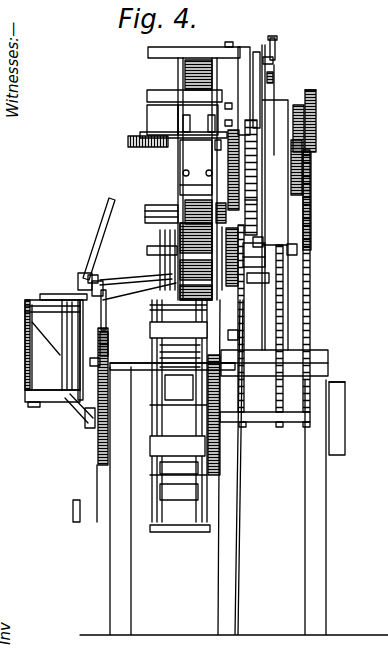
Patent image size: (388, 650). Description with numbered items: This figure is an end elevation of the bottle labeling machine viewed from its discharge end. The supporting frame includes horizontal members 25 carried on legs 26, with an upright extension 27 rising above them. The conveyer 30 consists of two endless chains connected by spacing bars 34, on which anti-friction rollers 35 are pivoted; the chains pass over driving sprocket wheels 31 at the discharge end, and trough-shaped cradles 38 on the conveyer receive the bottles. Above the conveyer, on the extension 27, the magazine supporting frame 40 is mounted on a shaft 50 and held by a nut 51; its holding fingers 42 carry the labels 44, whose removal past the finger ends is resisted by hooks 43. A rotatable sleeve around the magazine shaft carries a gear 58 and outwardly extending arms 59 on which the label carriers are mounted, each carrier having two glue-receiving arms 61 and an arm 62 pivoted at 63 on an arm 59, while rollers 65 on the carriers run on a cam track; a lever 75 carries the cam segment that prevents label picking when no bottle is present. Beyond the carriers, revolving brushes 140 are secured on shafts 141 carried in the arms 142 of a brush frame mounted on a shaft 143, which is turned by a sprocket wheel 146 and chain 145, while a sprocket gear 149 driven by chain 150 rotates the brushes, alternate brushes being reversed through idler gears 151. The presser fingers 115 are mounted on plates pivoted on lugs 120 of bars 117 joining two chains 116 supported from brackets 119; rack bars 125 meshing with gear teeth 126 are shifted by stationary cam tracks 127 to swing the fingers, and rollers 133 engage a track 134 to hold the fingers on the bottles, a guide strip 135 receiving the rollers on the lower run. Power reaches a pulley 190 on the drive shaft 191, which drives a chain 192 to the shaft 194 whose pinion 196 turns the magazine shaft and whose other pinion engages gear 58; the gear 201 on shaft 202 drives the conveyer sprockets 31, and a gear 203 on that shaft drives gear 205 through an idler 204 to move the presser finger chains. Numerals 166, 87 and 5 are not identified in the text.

The arms 61 is at (148, 52).
The lever 75 is at (276, 43).
The arm 62 is at (273, 60).
The pivot 63 is at (273, 78).
The wheels or rollers 65 is at (263, 132).
The rack 166 is at (303, 106).
The pinion 196 is at (317, 132).
The shaft 194 is at (283, 110).
The rack bar 87 is at (240, 160).
The gear 58 is at (258, 174).
The arms 59 is at (250, 199).
The upright extension 27 is at (270, 197).
The chain 192 is at (312, 208).
The sprocket wheel 146 is at (299, 251).
The sprocket gear 149 is at (258, 256).
The arms of brush supporting frame 142 is at (272, 292).
The shafts 141 is at (230, 291).
The chain 150 is at (237, 334).
The idler gears 151 is at (272, 291).
The chain 145 is at (285, 316).
The transverse horizontal members 25 is at (322, 356).
The drive shaft 191 is at (336, 410).
The pulley 190 is at (345, 414).
The legs 26 is at (327, 499).
The shaft 202 is at (258, 423).
The gear 201 is at (222, 460).
The shaft 50 is at (128, 141).
The nut 51 is at (183, 142).
The labels 44 is at (178, 72).
The hooks 43 is at (183, 173).
The magazine supporting frame 40 is at (180, 186).
The holding fingers 42 is at (158, 212).
The shaft 143 is at (154, 236).
The revolving brushes 140 is at (196, 261).
The rack bars 125 is at (58, 293).
The lugs 120 is at (76, 292).
The roller 133 is at (94, 274).
The gear teeth 126 is at (104, 286).
The track 134 is at (136, 274).
The bars 117 is at (33, 300).
The brackets 119 is at (42, 338).
The chains 116 is at (30, 351).
The gear 205 is at (108, 350).
The idler 204 is at (100, 363).
The cam tracks 127 is at (65, 375).
The guide strip 135 is at (90, 431).
The gear 203 is at (98, 458).
The lever 5 is at (108, 301).
The presser fingers 115 is at (100, 230).
The cradles 38 is at (178, 411).
The conveyer 30 is at (200, 391).
The spacing bars 34 is at (179, 467).
The driving sprocket wheels 31 is at (197, 492).
The anti-friction rollers 35 is at (200, 529).